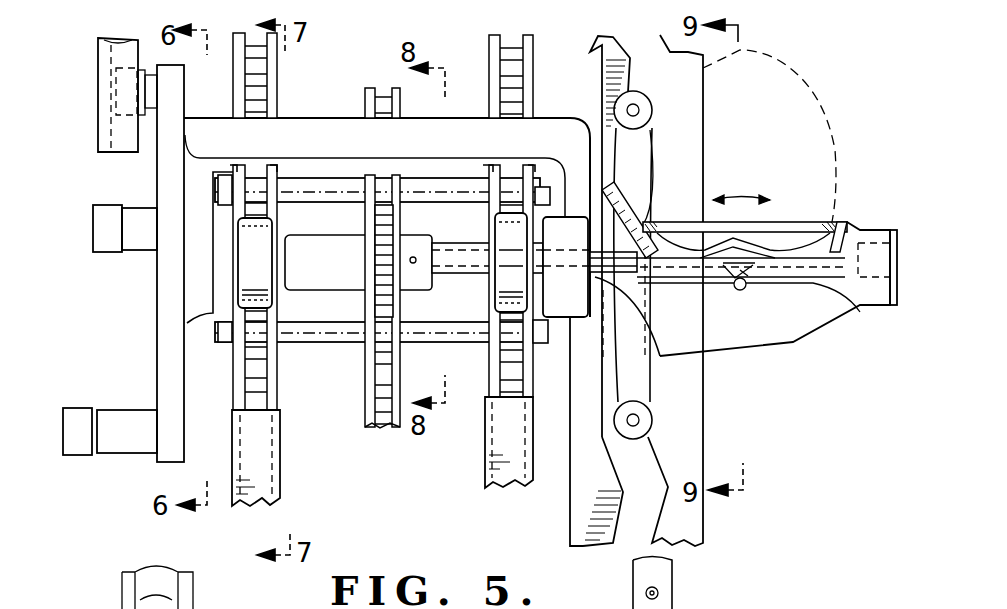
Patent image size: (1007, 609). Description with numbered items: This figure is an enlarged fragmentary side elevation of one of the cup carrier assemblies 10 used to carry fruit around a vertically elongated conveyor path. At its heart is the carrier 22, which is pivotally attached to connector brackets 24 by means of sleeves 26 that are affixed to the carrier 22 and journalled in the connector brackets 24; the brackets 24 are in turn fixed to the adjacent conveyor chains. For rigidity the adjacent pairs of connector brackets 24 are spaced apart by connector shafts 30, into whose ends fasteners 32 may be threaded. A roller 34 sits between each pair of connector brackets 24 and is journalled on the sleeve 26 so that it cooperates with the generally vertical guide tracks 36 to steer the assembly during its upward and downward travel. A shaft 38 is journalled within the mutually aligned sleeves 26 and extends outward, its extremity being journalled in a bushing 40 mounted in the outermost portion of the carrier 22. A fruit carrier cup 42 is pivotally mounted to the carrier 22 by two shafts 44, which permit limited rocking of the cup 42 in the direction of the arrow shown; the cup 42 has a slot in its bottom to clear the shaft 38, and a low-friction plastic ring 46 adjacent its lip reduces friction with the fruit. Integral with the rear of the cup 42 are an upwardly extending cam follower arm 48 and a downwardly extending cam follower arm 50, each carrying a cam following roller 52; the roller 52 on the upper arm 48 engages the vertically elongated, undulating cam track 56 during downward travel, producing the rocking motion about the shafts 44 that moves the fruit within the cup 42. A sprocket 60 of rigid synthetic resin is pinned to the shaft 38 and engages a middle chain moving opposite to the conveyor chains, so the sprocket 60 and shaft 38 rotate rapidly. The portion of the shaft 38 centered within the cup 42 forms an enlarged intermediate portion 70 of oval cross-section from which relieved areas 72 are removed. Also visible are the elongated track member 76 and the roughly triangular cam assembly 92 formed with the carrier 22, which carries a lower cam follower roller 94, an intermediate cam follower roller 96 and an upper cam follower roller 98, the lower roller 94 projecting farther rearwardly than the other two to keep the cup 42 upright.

The cup carrier assembly 10 is at (815, 345).
The carrier 22 is at (443, 125).
The connector brackets 24 is at (278, 358).
The sleeves 26 is at (435, 275).
The connector shafts 30 is at (305, 190).
The fasteners 32 is at (218, 172).
The roller 34 is at (245, 268).
The guide tracks 36 is at (280, 497).
The shaft 38 is at (600, 290).
The bushing 40 is at (875, 243).
The fruit carrier cup 42 is at (847, 225).
The shafts 44 is at (737, 290).
The ring 46 is at (828, 222).
The cam follower arm 48 is at (650, 152).
The cam follower arm 50 is at (660, 385).
The cam following roller 52 is at (643, 92).
The cam track 56 is at (618, 473).
The sprocket 60 is at (378, 225).
The intermediate portion 70 is at (720, 275).
The relieved areas 72 is at (747, 272).
The elongated member 76 is at (100, 143).
The cam assembly 92 is at (155, 349).
The lower cam follower roller 94 is at (75, 447).
The intermediate cam follower roller 96 is at (95, 240).
The upper cam follower roller 98 is at (116, 100).